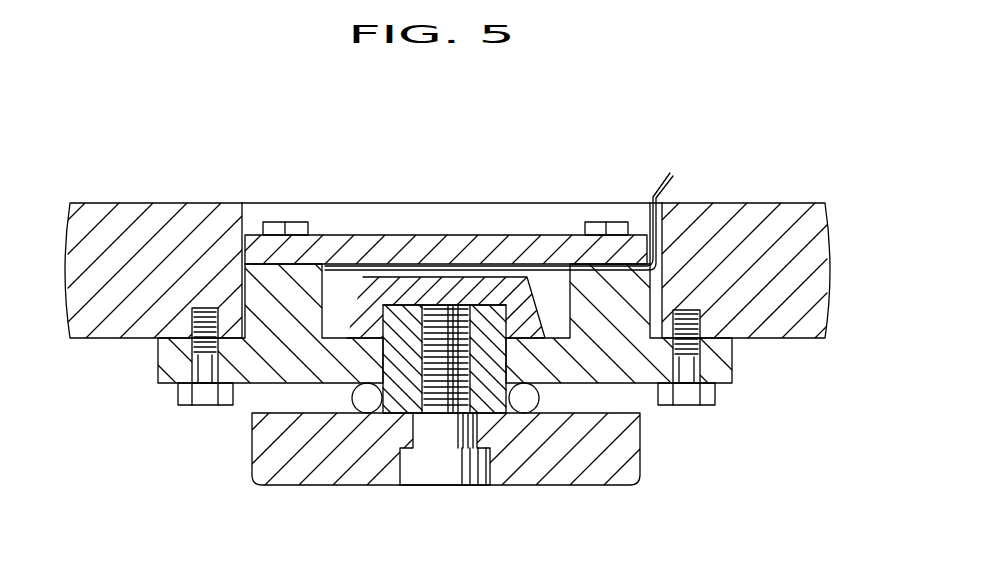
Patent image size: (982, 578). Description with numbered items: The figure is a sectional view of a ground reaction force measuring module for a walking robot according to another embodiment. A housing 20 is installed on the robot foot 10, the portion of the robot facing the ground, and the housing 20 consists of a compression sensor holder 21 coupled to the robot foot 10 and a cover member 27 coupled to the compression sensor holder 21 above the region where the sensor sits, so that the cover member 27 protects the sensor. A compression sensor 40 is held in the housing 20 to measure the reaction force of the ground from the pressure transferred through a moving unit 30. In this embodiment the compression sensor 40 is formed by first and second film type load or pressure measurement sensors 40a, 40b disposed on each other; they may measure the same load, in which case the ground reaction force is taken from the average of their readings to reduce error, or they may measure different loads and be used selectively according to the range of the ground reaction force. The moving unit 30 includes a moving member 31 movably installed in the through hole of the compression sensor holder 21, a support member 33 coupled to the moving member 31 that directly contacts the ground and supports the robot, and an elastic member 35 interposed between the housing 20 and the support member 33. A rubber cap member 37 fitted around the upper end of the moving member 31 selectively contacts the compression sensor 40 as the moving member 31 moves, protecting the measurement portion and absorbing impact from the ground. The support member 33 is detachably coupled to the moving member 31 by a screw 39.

The robot foot 10 is at (812, 213).
The housing 20 is at (429, 205).
The compression sensor holder 21 is at (728, 360).
The cover member 27 is at (516, 250).
The moving unit 30 is at (403, 431).
The moving member 31 is at (390, 390).
The support member 33 is at (297, 487).
The elastic member 35 is at (527, 392).
The cap member 37 is at (530, 283).
The screw 39 is at (442, 487).
The compression sensor 40 is at (543, 170).
The first film type load or pressure measurement sensor 40a is at (672, 172).
The second film type load or pressure measurement sensor 40b is at (648, 108).